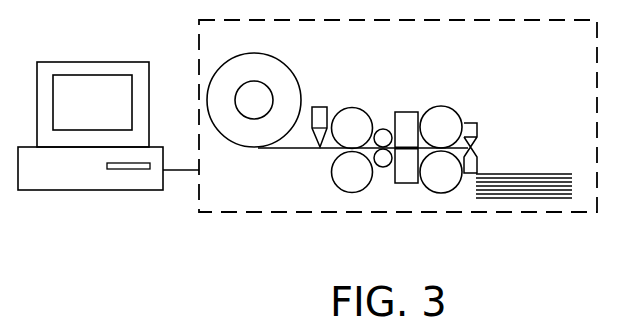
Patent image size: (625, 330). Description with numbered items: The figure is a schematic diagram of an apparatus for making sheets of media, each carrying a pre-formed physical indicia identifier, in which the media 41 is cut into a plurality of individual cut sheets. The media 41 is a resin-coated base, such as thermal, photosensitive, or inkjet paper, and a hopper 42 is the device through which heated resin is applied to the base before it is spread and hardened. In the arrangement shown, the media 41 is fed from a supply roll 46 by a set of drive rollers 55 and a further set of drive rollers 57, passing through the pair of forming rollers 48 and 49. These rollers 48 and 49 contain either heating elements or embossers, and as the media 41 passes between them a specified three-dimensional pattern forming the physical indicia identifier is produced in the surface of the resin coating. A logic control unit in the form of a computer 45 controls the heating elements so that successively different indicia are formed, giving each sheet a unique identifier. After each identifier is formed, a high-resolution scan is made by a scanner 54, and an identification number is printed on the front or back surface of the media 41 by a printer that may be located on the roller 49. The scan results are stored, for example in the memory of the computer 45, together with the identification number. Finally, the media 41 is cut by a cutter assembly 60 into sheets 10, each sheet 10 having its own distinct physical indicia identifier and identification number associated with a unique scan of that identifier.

The sheet 10 is at (540, 174).
The media 41 is at (285, 150).
The hopper 42 is at (318, 107).
The computer 45 is at (47, 63).
The roll 46 is at (270, 56).
The physical indicia identifier forming roller 48 is at (400, 112).
The roller 49 is at (383, 167).
The scanner 54 is at (407, 183).
The drive rollers 55 is at (357, 108).
The drive rollers 57 is at (445, 106).
The cutter assembly 60 is at (479, 123).